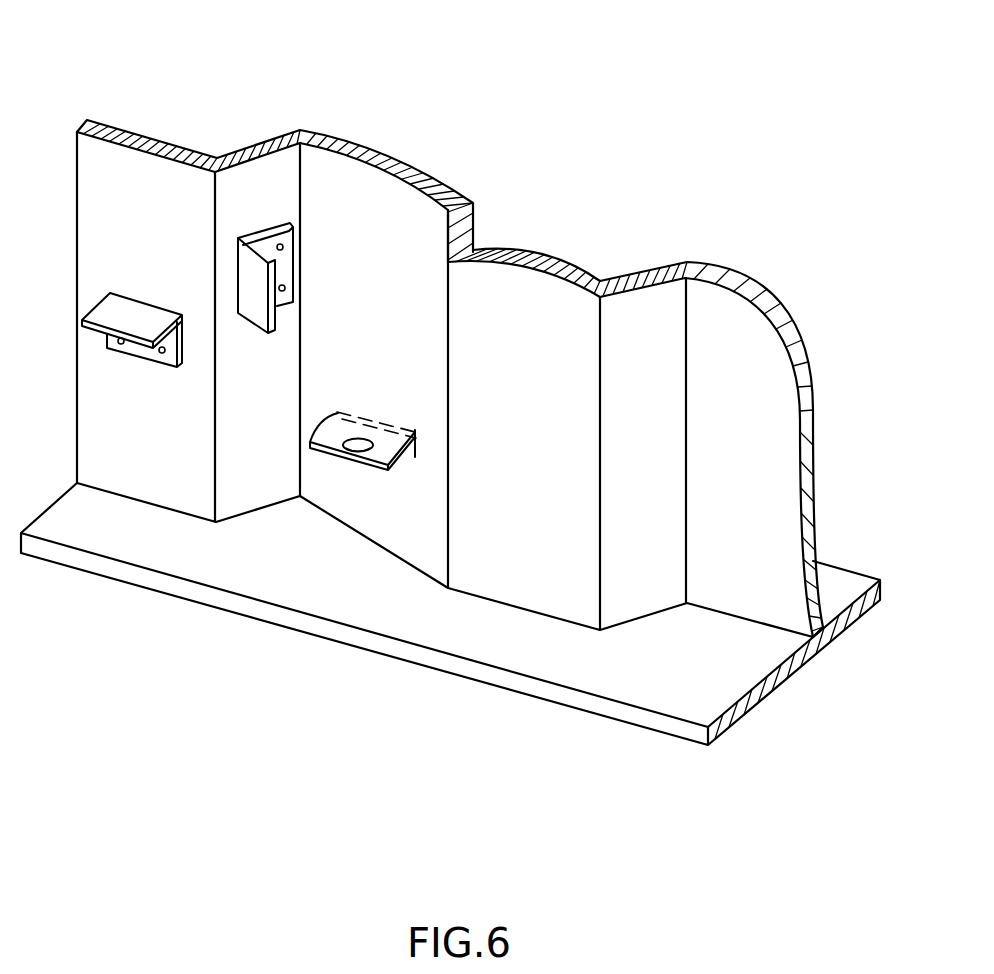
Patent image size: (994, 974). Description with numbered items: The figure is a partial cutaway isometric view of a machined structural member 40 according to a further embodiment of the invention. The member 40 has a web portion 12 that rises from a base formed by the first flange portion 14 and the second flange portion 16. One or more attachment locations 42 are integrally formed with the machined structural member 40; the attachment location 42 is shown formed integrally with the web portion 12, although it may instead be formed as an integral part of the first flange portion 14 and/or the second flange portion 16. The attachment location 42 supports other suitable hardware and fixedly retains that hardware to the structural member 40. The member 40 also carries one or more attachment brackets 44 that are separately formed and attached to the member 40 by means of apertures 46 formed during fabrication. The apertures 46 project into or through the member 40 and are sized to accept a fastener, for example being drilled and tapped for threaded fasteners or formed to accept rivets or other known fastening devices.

The machined structural member 40 is at (600, 100).
The web portion 12 is at (737, 280).
The first flange portion 14 is at (449, 614).
The second flange portion 16 is at (113, 567).
The attachment location 42 is at (368, 470).
The attachment bracket 44 is at (103, 310).
The aperture 46 is at (163, 353).